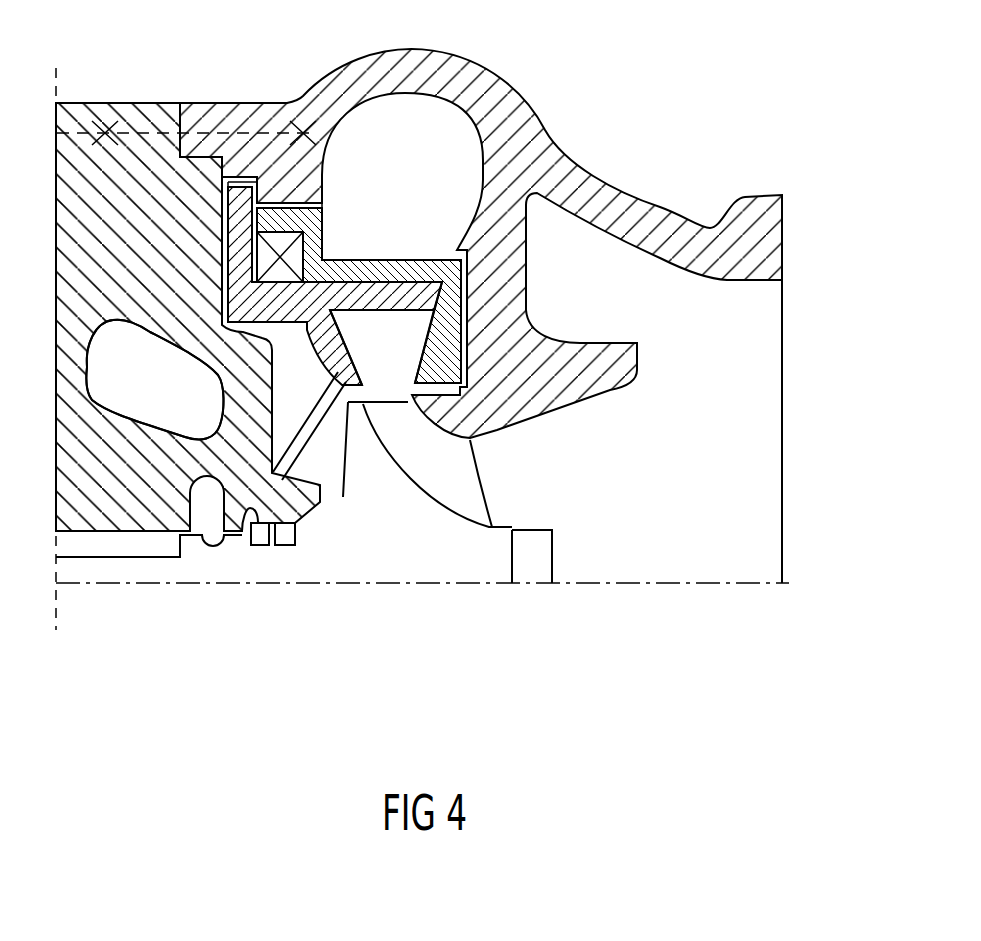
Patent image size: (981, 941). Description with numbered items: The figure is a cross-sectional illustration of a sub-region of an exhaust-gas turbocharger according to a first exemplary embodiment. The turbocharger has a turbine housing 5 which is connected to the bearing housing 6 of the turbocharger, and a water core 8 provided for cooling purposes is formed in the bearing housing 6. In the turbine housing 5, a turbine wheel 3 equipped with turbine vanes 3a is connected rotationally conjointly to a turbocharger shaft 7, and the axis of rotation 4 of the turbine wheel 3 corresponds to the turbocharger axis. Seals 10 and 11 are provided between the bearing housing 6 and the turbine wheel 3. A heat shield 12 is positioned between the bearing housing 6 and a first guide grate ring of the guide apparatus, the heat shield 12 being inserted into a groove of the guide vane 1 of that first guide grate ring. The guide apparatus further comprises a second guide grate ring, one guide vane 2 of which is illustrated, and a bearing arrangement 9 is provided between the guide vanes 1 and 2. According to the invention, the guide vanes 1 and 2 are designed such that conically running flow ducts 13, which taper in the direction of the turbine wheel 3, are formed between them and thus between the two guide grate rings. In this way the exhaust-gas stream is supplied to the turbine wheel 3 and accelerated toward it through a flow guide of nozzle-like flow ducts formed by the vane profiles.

The guide vane 1 is at (377, 310).
The guide vane 2 is at (395, 268).
The turbine wheel 3 is at (408, 570).
The turbine vanes 3a is at (467, 468).
The axis of rotation 4 is at (660, 584).
The turbine housing 5 is at (545, 150).
The bearing housing 6 is at (137, 120).
The turbocharger shaft 7 is at (144, 572).
The water core 8 is at (158, 397).
The bearing arrangement 9 is at (298, 256).
The seal 10 is at (260, 546).
The seal 11 is at (290, 546).
The heat shield 12 is at (300, 447).
The flow duct 13 is at (402, 387).